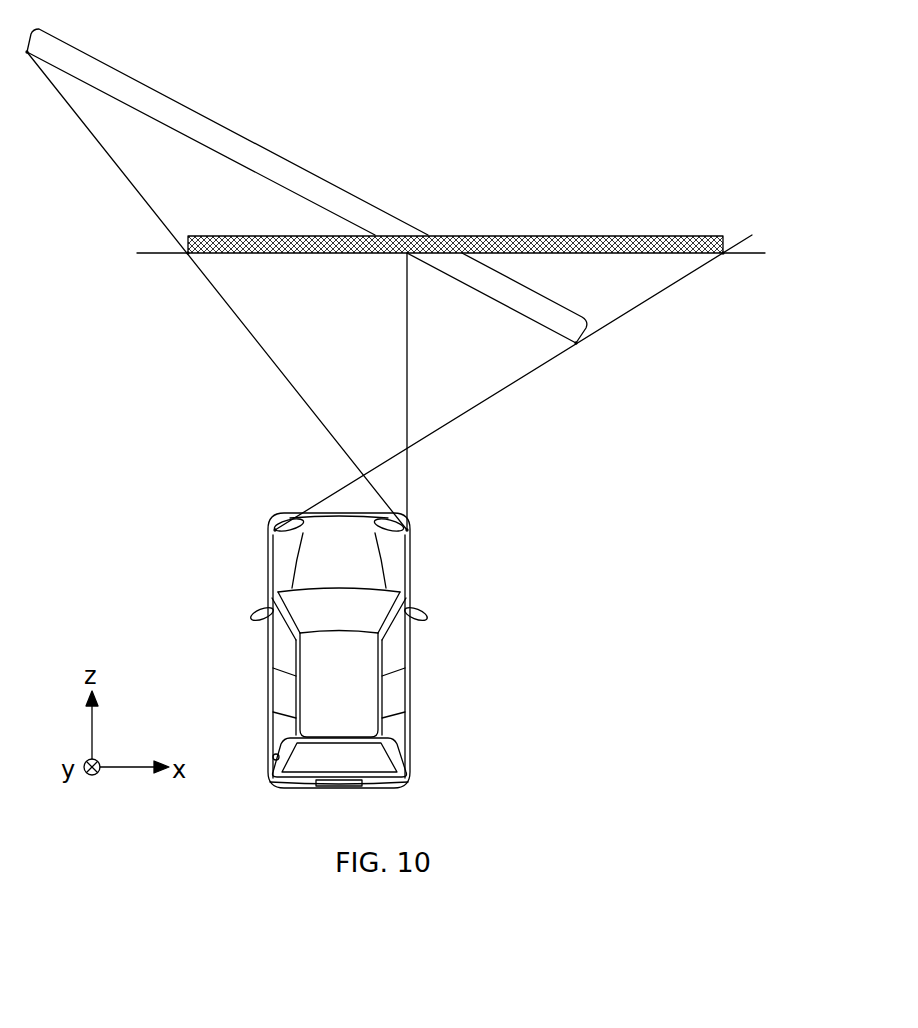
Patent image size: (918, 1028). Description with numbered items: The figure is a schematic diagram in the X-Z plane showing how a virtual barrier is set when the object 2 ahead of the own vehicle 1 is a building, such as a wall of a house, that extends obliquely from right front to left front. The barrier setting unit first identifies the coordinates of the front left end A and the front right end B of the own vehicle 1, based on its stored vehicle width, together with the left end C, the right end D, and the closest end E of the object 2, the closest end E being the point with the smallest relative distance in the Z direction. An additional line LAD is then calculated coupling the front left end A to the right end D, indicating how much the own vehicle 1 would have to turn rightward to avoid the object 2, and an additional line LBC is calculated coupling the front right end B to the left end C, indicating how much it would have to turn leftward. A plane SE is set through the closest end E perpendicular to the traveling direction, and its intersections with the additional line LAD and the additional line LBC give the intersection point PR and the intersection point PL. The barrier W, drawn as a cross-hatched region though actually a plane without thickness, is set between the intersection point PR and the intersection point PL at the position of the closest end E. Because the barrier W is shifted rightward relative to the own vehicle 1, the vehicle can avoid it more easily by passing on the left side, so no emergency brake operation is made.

The own vehicle 1 is at (410, 598).
The object 2 is at (291, 162).
The barrier W is at (572, 236).
The plane SE is at (757, 253).
The intersection point PL is at (189, 254).
The intersection point PR is at (724, 254).
The left end of the object C is at (29, 56).
The right end of the object D is at (577, 344).
The closest end of the object E is at (406, 255).
The front left end of the own vehicle A is at (275, 530).
The front right end of the own vehicle B is at (408, 530).
The additional line LBC is at (322, 421).
The additional line LAD is at (452, 421).